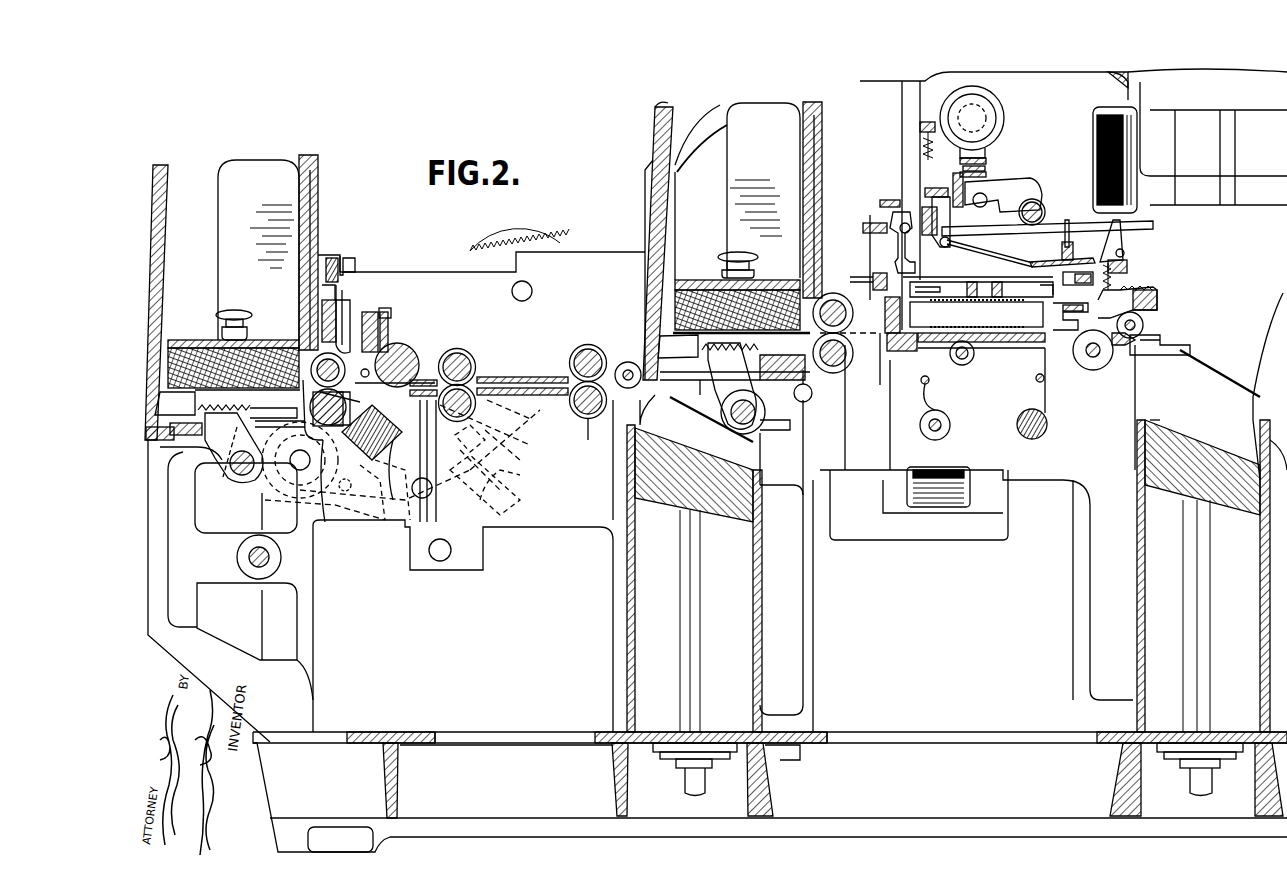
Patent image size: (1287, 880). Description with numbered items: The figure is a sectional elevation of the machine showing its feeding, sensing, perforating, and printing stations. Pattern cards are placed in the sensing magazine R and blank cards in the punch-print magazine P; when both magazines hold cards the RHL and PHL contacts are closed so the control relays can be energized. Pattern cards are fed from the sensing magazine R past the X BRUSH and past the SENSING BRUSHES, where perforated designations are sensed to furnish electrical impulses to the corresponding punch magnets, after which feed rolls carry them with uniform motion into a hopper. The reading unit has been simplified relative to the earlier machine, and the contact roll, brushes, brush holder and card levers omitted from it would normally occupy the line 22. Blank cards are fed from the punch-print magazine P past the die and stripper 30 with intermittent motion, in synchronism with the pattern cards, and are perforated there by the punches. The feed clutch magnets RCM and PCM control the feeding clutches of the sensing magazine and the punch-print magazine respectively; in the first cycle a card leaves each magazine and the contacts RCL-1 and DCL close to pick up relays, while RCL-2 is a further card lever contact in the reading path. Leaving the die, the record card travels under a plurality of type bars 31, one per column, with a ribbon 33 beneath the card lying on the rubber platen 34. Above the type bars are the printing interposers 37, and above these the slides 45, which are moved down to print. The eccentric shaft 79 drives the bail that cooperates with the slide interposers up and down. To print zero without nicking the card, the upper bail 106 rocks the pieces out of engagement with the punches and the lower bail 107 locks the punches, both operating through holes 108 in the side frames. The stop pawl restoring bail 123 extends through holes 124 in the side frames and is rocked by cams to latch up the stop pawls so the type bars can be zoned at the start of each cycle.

The sensing magazine R is at (231, 297).
The punch-print magazine P is at (732, 241).
The RHL contacts RHL is at (215, 404).
The PHL contacts PHL is at (716, 346).
The X-brush X BRUSH is at (357, 330).
The card lever contacts RCL-2 is at (405, 345).
The card lever contacts RCL-1 is at (323, 515).
The sensing magazine feed clutch magnet RCM is at (456, 550).
The sensing brushes SENSING BRUSHES is at (385, 500).
The line 22— 22 is at (541, 470).
The die card lever contacts DCL is at (813, 382).
The punch-print magazine feed clutch magnet PCM is at (945, 507).
The slide 45 is at (903, 127).
The eccentric shaft 79 is at (985, 118).
The upper bail 106 is at (880, 212).
The holes 108 is at (875, 250).
The lower bail 107 is at (878, 292).
The printing interposer 37 is at (982, 278).
The stop pawl restoring bail 123 is at (1077, 245).
The holes 124 is at (1082, 275).
The type bar 31 is at (1033, 317).
The die and stripper 30 is at (887, 345).
The rubber platen 34 is at (1000, 348).
The ribbon 33 is at (1043, 362).